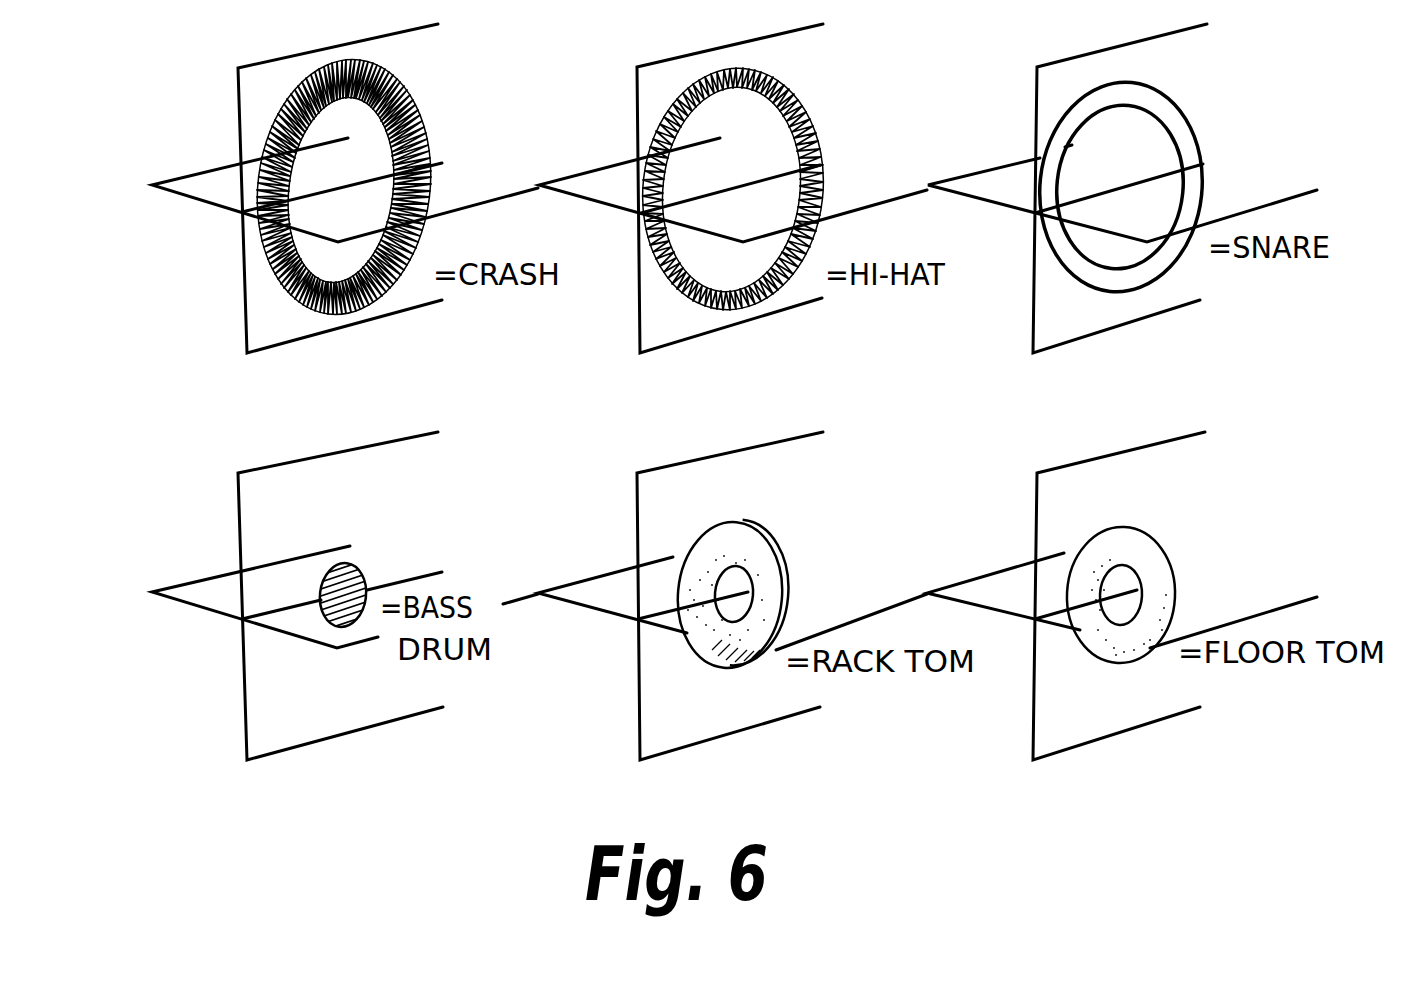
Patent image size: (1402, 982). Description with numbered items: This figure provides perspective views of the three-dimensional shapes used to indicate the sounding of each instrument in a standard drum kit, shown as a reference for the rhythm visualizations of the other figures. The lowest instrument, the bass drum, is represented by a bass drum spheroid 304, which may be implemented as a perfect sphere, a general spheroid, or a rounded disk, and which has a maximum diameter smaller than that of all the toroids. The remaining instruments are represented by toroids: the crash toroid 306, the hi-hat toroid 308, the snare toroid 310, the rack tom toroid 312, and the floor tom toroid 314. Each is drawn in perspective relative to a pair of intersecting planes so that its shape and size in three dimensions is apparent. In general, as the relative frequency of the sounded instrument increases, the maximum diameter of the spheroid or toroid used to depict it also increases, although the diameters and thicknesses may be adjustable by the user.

The bass drum spheroid 304 is at (360, 573).
The crash toroid 306 is at (428, 183).
The hi-hat toroid 308 is at (820, 193).
The snare toroid 310 is at (1202, 188).
The rack tom toroid 312 is at (787, 587).
The floor tom toroid 314 is at (1177, 590).